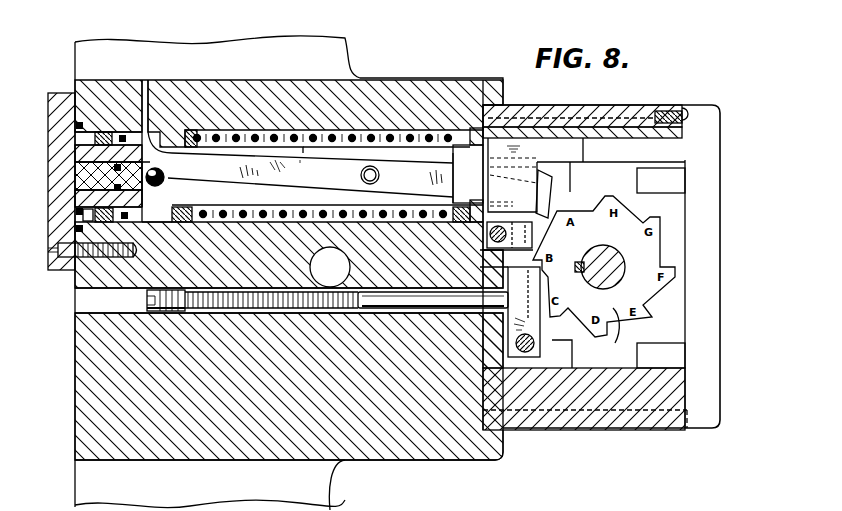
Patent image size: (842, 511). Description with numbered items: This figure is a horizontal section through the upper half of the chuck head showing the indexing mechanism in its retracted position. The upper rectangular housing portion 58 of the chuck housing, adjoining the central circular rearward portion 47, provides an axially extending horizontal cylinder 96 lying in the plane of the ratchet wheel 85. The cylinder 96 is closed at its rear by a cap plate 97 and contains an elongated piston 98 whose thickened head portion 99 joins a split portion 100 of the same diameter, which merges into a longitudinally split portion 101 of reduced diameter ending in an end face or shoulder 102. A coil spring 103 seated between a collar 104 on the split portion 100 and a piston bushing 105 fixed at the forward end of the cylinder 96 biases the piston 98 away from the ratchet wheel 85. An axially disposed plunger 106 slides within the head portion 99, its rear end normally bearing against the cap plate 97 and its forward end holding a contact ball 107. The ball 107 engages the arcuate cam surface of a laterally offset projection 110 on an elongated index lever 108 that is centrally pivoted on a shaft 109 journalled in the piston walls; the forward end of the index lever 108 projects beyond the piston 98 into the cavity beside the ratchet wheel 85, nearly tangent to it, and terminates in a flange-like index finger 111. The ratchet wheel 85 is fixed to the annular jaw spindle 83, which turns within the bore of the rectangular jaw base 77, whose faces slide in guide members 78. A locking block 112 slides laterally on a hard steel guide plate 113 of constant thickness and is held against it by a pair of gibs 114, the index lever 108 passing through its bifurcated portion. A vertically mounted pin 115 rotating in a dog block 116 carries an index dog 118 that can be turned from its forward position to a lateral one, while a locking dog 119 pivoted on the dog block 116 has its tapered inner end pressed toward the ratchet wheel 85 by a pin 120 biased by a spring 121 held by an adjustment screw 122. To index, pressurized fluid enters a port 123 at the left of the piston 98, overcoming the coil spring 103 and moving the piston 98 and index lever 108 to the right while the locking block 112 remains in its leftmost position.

The central circular rearward portion 47 is at (330, 487).
The upper rectangular housing portion 58 is at (405, 462).
The jaw base 77 is at (670, 318).
The guide members 78 is at (672, 183).
The jaw spindle 83 is at (623, 260).
The ratchet wheel 85 is at (619, 335).
The cylinder 96 is at (248, 135).
The cap plate 97 is at (48, 108).
The piston 98 is at (87, 200).
The head portion 99 is at (143, 130).
The split portion 100 is at (167, 218).
The longitudinally split portion of reduced diameter 101 is at (435, 157).
The end face or shoulder 102 is at (457, 160).
The coil spring 103 is at (332, 132).
The collar 104 is at (186, 130).
The piston bushing 105 is at (483, 130).
The plunger 106 is at (100, 163).
The contact ball 107 is at (165, 178).
The index lever 108 is at (327, 182).
The shaft 109 is at (379, 175).
The laterally offset projection 110 is at (157, 140).
The index finger 111 is at (545, 197).
The locking block 112 is at (552, 150).
The guide plate 113 is at (628, 130).
The gibs 114 is at (667, 162).
The pin 115 is at (500, 227).
The dog block 116 is at (543, 353).
The index dog 118 is at (520, 238).
The locking dog 119 is at (522, 327).
The pin 120 is at (462, 306).
The spring 121 is at (330, 267).
The adjustment screw 122 is at (145, 303).
The port 123 is at (62, 173).